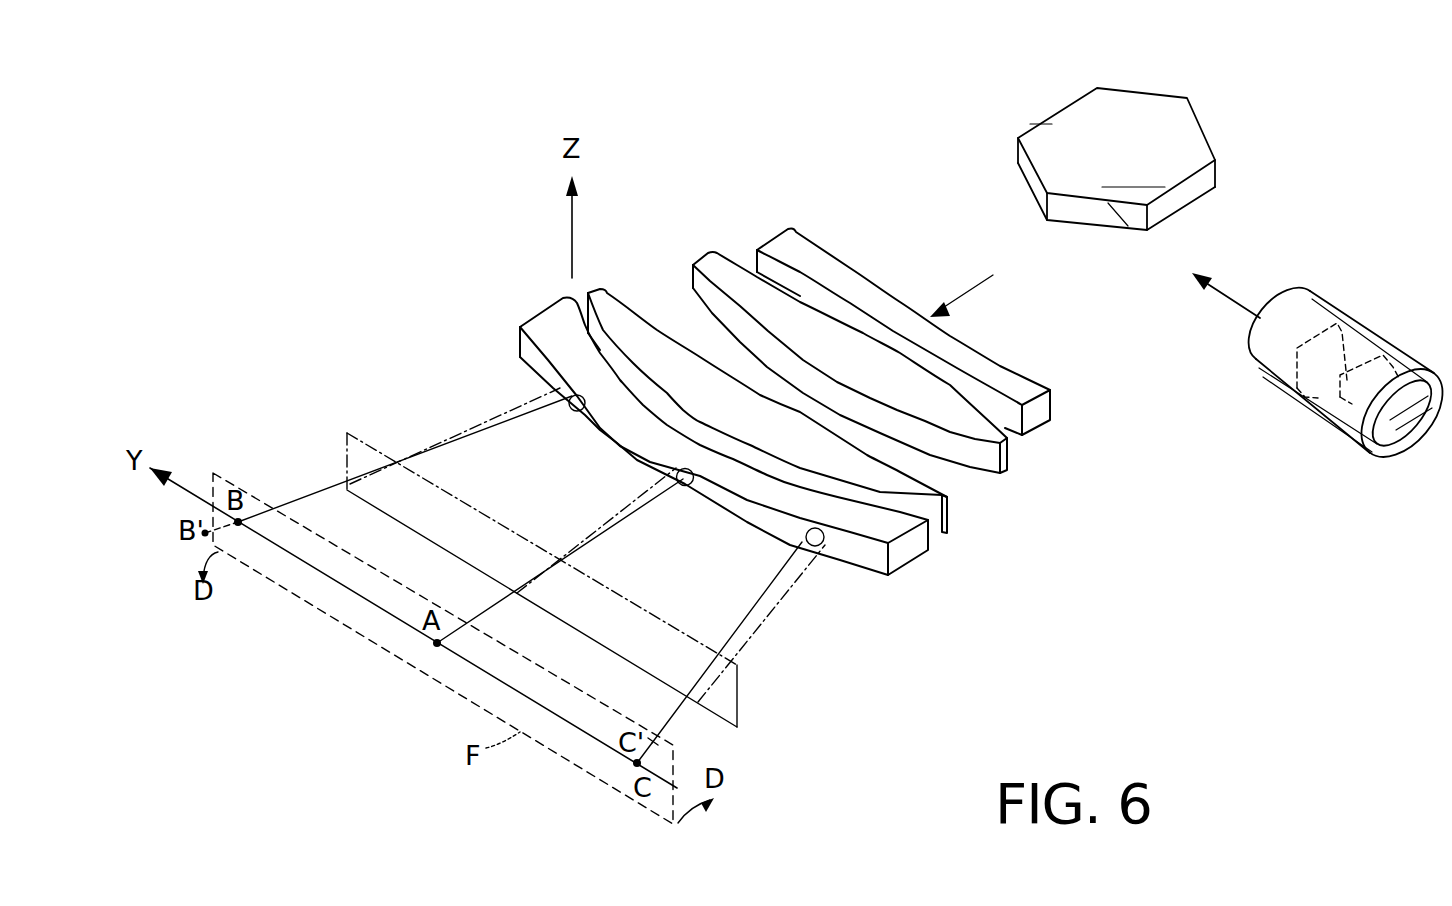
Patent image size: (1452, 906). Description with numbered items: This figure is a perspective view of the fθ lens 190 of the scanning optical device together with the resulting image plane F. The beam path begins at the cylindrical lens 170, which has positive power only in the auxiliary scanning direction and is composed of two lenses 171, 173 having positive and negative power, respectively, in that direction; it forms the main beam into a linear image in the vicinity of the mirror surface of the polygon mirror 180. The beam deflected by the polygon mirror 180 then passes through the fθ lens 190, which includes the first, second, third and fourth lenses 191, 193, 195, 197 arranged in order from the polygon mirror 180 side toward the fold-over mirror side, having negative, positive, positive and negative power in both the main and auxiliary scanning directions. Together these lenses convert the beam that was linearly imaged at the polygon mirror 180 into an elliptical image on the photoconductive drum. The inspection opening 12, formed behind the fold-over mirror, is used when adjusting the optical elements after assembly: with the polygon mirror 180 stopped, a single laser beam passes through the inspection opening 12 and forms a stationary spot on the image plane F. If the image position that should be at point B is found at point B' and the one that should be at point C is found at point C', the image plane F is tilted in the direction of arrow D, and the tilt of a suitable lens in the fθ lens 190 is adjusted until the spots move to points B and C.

The inspection opening 12 is at (357, 441).
The cylindrical lens 170 is at (1322, 370).
The lens 171 is at (1330, 424).
The lens 173 is at (1283, 396).
The polygon mirror 180 is at (1110, 123).
The fθ lens 190 is at (645, 262).
The first lens 191 is at (1043, 413).
The second lens 193 is at (1010, 457).
The third lens 195 is at (948, 518).
The fourth lens 197 is at (902, 558).